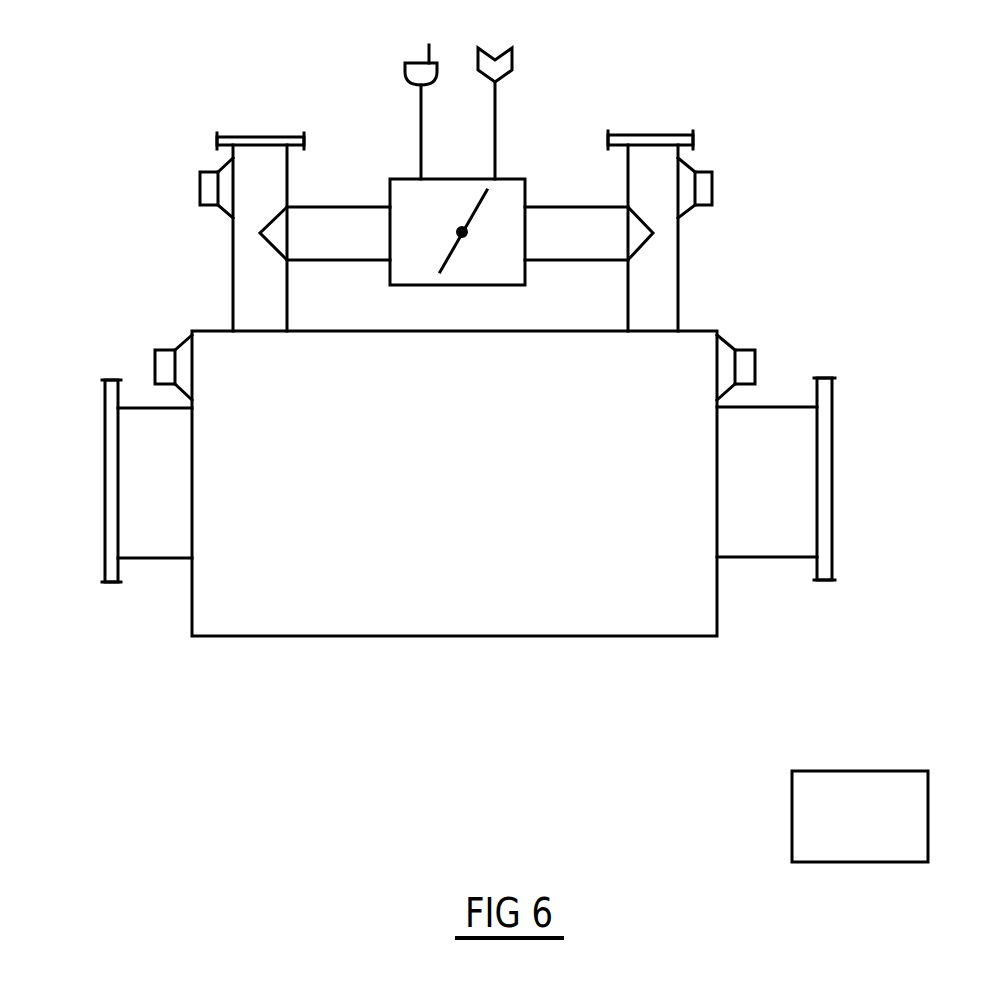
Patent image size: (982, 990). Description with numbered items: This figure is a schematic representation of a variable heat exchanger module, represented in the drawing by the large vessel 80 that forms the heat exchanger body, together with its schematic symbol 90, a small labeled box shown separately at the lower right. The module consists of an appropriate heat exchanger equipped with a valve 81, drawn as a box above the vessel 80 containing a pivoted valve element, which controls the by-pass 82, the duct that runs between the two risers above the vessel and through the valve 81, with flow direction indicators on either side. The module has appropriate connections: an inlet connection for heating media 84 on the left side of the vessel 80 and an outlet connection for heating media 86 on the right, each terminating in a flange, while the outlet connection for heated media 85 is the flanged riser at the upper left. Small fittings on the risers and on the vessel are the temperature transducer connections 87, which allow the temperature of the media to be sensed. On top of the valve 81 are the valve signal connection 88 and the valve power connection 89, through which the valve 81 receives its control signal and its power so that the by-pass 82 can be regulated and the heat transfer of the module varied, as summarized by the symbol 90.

The gas processing vessel 80 is at (455, 519).
The valve 81 is at (525, 179).
The by-pass 82 is at (585, 248).
The inlet connection for heating media 84 is at (103, 510).
The outlet connection for heated media 85 is at (225, 136).
The outlet connection for heating media 86 is at (833, 483).
The temperature transducer connection 87 is at (202, 192).
The valve signal connection 88 is at (414, 62).
The valve power connection 89 is at (508, 50).
The schematic symbol of the variable heat-transfer module 90 is at (853, 777).